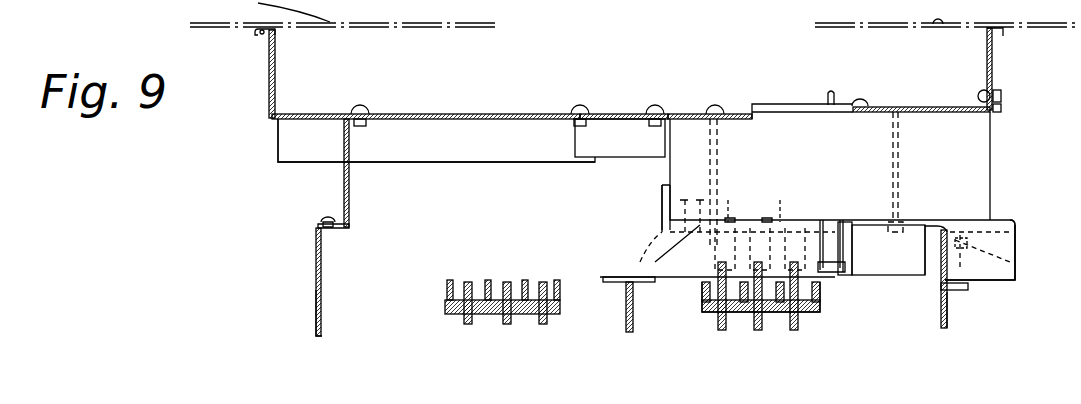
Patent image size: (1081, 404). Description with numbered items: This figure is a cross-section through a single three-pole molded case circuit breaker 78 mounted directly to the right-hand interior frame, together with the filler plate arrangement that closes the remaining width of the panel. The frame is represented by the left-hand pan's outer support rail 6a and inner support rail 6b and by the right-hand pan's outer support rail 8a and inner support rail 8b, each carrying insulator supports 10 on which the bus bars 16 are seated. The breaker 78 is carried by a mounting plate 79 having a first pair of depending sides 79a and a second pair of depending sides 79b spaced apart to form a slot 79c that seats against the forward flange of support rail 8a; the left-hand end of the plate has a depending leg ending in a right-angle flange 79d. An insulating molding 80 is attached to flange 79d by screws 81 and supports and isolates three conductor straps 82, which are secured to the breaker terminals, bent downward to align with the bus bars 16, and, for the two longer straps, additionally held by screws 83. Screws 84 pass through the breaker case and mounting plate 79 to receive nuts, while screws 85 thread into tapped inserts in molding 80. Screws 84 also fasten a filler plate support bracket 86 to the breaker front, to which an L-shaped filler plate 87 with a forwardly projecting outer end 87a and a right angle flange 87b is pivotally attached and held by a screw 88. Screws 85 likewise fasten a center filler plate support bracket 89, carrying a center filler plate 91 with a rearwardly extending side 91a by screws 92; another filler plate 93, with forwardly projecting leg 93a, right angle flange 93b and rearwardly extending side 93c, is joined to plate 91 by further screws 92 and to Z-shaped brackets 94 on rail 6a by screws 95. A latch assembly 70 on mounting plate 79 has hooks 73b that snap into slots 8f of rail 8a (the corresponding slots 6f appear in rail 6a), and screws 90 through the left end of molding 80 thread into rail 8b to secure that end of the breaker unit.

The outer support rail 6a is at (323, 255).
The inner support rail 6b is at (625, 325).
The slot 6f is at (323, 290).
The outer support rail 8a is at (950, 326).
The inner support rail 8b is at (640, 322).
The slot 8f is at (955, 306).
The insulator support 10 is at (445, 306).
The bus bar 16 is at (543, 280).
The latch assembly 70 is at (1024, 246).
The hook 73b is at (970, 290).
The molded case circuit breaker 78 is at (797, 100).
The mounting plate 79 is at (1015, 225).
The first pair of depending sides 79a is at (882, 272).
The second pair of depending sides 79b is at (1005, 277).
The slot 79c is at (936, 262).
The right-angle flange 79d is at (833, 262).
The insulating molding 80 is at (698, 280).
The screw 81 is at (832, 262).
The conductor strap 82 is at (665, 248).
The screw 83 is at (735, 222).
The screw 84 is at (862, 104).
The screw 85 is at (716, 110).
The filler plate support bracket 86 is at (1000, 108).
The L-shaped filler plate 87 is at (920, 106).
The forwardly projecting outer end 87a is at (995, 68).
The right angle flange 87b is at (1000, 32).
The screw 88 is at (982, 94).
The center filler plate support bracket 89 is at (690, 112).
The screw 90 is at (640, 262).
The center filler plate 91 is at (612, 112).
The rearwardly extending side 91a is at (630, 150).
The screw 92 is at (580, 110).
The filler plate 93 is at (458, 112).
The forwardly projecting leg 93a is at (268, 80).
The right angle flange 93b is at (258, 36).
The rearwardly extending side 93c is at (300, 162).
The Z-shaped bracket 94 is at (352, 193).
The screw 95 is at (358, 110).